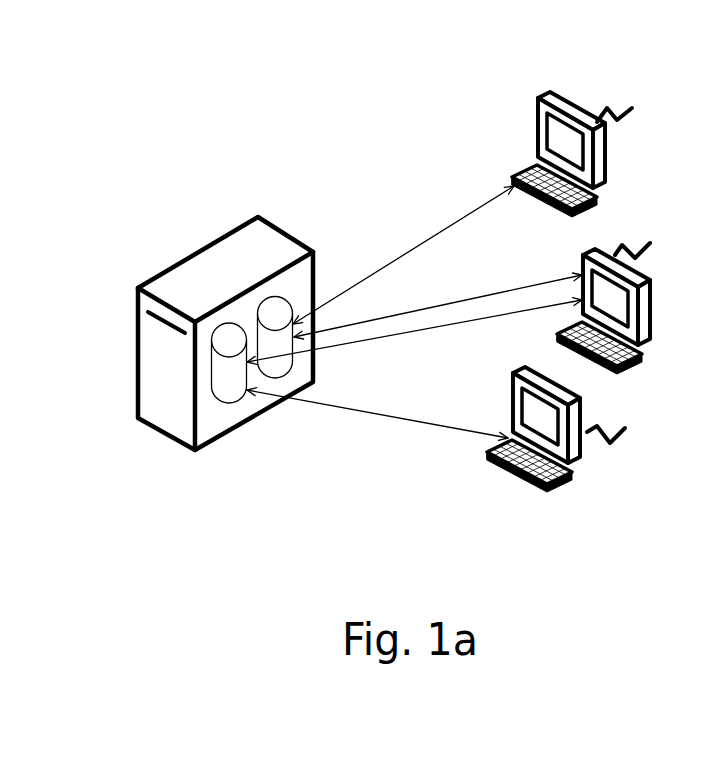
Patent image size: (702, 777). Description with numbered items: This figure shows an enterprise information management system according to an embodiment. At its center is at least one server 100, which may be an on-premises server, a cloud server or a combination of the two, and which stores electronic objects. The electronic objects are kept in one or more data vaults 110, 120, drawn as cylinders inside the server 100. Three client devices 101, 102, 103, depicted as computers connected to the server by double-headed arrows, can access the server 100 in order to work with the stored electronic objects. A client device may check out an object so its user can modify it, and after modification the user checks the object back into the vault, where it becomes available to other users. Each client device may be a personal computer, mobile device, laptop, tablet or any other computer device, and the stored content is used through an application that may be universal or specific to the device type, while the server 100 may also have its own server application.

The server 100 is at (225, 333).
The data vault 110 is at (229, 363).
The data vault 120 is at (276, 337).
The client device 101 is at (587, 146).
The client device 102 is at (623, 287).
The client device 103 is at (578, 429).